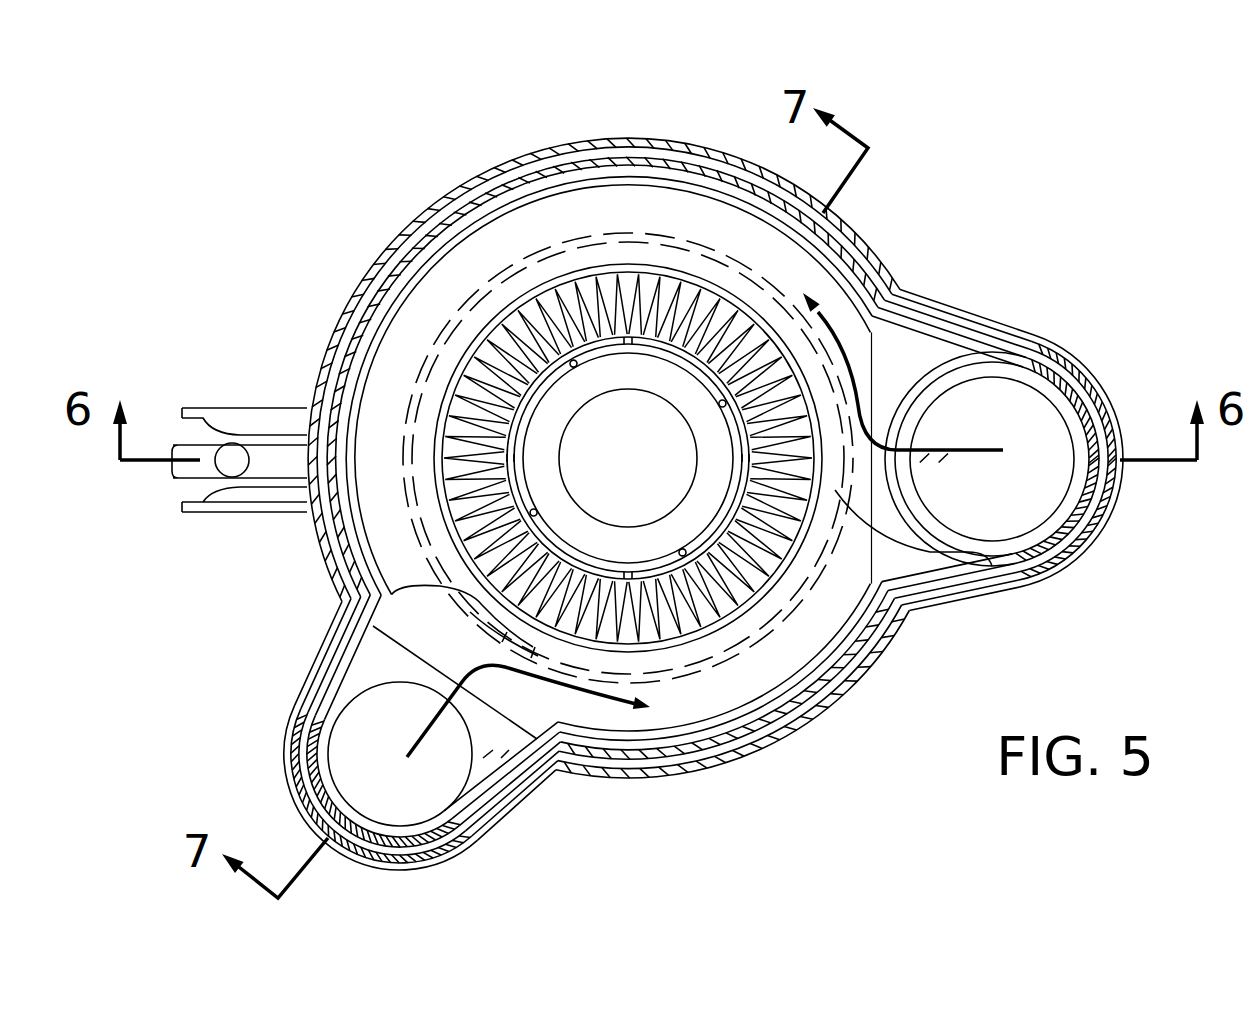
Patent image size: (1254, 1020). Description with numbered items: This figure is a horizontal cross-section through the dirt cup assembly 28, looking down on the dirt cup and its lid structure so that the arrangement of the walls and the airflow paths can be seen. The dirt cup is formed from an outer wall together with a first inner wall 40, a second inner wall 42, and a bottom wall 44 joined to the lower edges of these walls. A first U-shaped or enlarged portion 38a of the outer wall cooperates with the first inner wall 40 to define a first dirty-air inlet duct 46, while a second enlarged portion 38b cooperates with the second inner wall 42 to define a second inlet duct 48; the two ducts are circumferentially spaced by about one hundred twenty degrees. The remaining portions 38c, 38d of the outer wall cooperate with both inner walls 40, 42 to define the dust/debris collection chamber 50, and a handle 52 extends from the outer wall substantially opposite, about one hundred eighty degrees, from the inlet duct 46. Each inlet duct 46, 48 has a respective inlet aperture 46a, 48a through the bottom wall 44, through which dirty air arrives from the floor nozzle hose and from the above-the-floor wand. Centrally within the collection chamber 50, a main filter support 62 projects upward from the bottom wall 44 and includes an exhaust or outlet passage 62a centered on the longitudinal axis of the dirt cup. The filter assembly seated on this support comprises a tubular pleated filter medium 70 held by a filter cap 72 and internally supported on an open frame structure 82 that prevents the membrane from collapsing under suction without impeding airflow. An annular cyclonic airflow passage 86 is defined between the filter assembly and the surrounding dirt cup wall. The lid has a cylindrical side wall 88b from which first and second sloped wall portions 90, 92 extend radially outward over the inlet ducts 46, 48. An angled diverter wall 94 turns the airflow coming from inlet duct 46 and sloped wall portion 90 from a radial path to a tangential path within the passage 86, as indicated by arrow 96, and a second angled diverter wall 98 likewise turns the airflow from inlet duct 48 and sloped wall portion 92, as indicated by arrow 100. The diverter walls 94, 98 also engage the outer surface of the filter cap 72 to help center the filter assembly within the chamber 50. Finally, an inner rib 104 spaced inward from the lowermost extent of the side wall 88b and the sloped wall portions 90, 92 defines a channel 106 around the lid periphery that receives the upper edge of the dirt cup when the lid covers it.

The dirt cup assembly 28 is at (924, 252).
The first U-shaped or enlarged portion of the outer wall 38a is at (1080, 558).
The second U-shaped or enlarged portion of the outer wall 38b is at (475, 815).
The remaining portion of the outer wall 38c is at (535, 172).
The remaining portion of the outer wall 38d is at (737, 758).
The first inner wall 40 is at (907, 522).
The second inner wall 42 is at (397, 652).
The bottom wall 44 is at (668, 713).
The first dirty-air conduit or inlet duct 46 is at (1030, 477).
The inlet aperture 46a is at (1010, 395).
The second dirty-air conduit or inlet duct 48 is at (388, 800).
The inlet aperture 48a is at (345, 777).
The dust/debris collection chamber 50 is at (486, 228).
The handle 52 is at (250, 432).
The main filter support 62 is at (623, 482).
The exhaust or outlet passage 62a is at (580, 413).
The filter medium 70 is at (690, 620).
The filter cap 72 is at (655, 268).
The open frame structure 82 is at (593, 572).
The annular cyclonic airflow passage 86 is at (618, 195).
The cylindrical side wall 88b is at (400, 236).
The first sloped wall portion 90 is at (1018, 323).
The second sloped wall portion 92 is at (420, 862).
The angled diverter wall 94 is at (838, 542).
The arrow 96 is at (845, 347).
The second angled diverter wall 98 is at (412, 598).
The arrow 100 is at (520, 682).
The inner rib 104 is at (848, 672).
The channel 106 is at (606, 763).